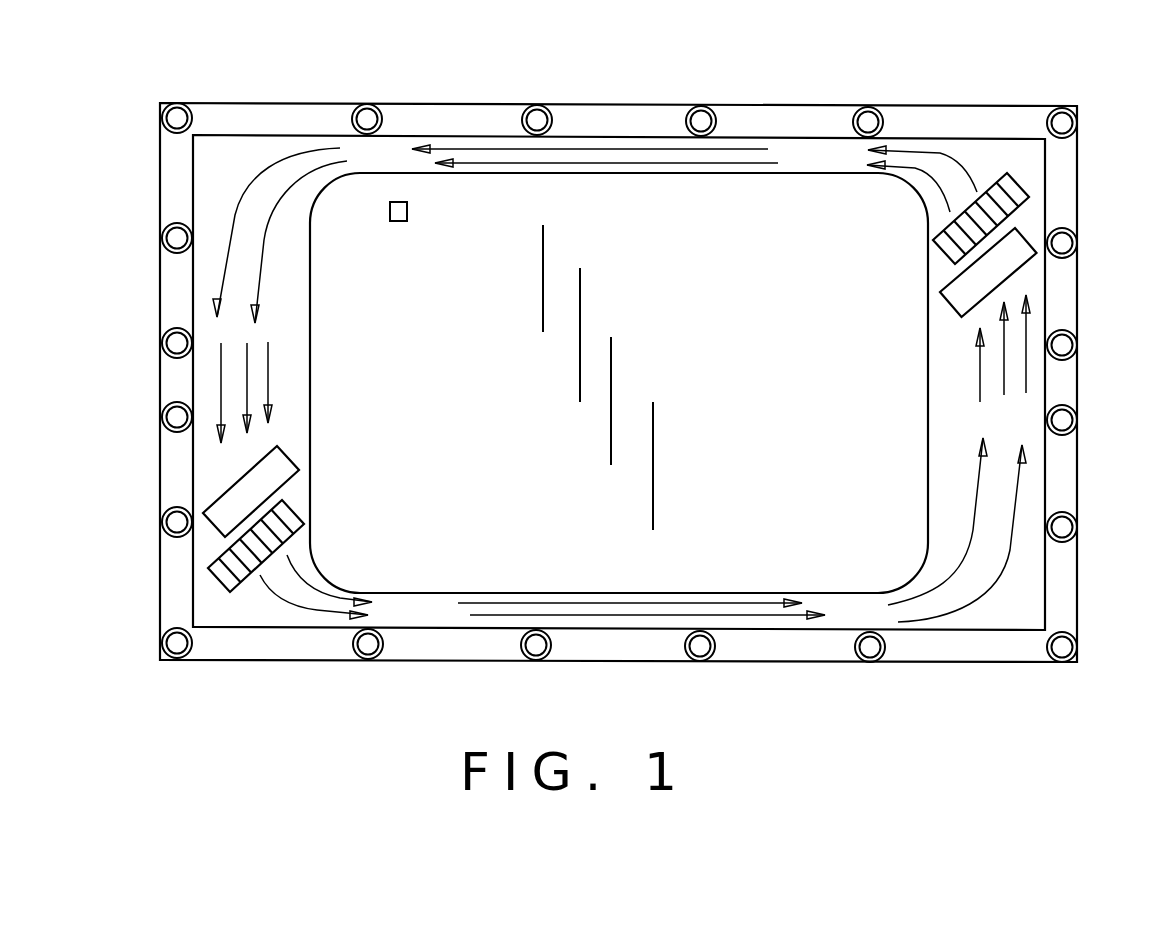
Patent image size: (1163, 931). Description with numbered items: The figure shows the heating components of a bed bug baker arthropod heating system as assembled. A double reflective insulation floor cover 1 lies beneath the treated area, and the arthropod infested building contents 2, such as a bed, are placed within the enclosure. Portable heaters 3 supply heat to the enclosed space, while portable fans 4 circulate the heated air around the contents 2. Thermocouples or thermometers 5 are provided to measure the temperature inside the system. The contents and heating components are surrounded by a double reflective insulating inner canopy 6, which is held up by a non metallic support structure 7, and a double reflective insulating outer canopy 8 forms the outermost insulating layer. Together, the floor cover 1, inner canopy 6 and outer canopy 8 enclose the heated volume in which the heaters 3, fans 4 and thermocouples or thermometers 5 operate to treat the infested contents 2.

The double reflective insulation floor cover 1 is at (953, 403).
The arthropod infested building contents 2 is at (752, 210).
The portable heaters 3 is at (1007, 193).
The portable fans 4 is at (1008, 262).
The thermocouples or thermometers 5 is at (398, 201).
The double reflective insulating inner canopy 6 is at (803, 630).
The non metallic support structure 7 is at (175, 138).
The double reflective insulating outer canopy 8 is at (239, 661).